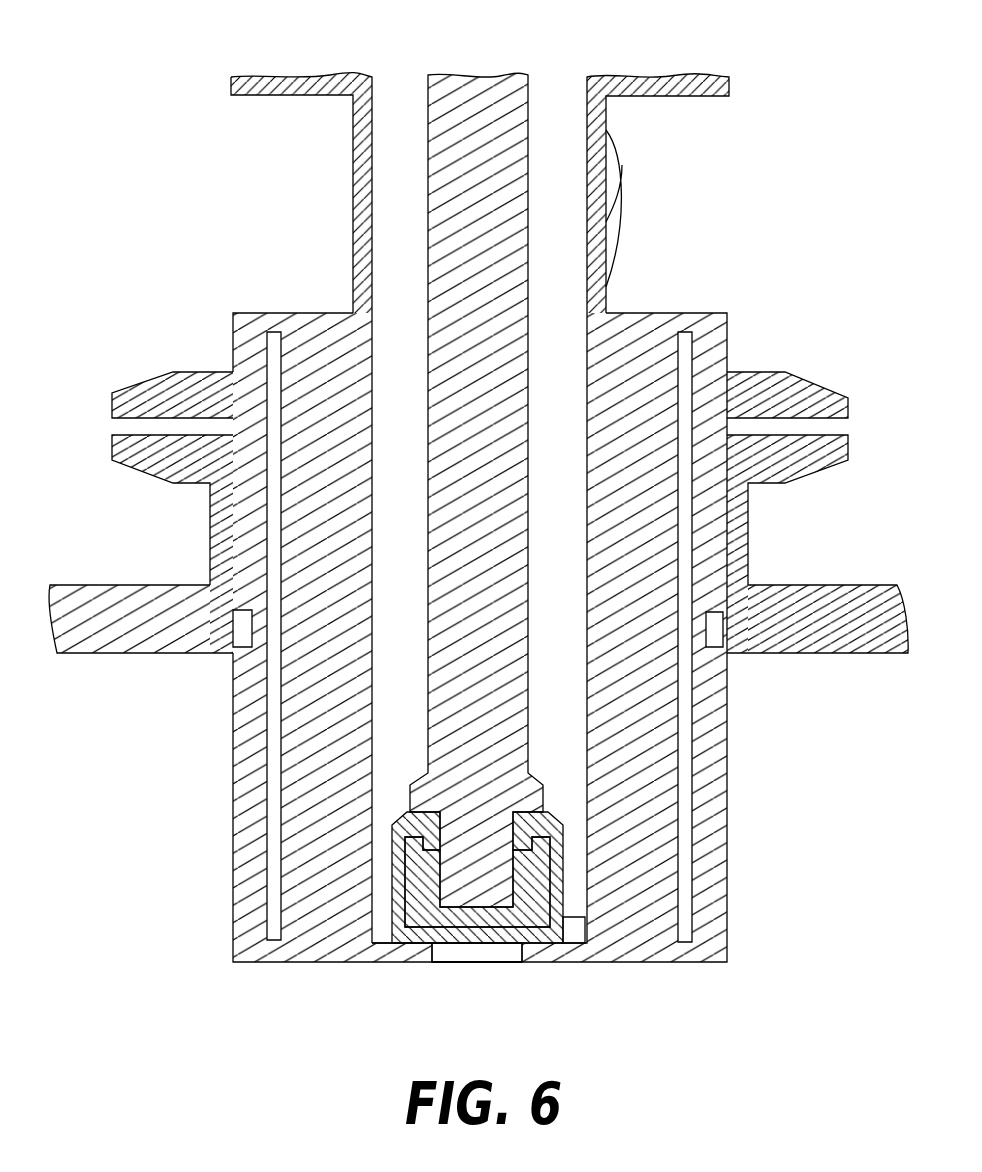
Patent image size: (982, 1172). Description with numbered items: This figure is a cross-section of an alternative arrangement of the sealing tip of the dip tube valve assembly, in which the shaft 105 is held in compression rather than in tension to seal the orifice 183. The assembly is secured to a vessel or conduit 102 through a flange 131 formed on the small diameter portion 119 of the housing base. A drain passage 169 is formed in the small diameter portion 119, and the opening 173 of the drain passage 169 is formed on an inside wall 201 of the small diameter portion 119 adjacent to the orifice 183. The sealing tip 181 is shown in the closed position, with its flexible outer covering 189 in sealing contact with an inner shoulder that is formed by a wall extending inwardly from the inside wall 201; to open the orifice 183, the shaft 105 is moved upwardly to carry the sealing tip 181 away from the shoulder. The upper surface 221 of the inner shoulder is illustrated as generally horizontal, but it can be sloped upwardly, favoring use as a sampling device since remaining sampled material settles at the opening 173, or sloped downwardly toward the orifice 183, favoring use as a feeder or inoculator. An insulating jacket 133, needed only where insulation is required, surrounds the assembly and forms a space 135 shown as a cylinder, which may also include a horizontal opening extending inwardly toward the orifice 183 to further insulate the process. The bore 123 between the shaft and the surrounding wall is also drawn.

The vessel or conduit 102 is at (820, 585).
The shaft 105 is at (530, 313).
The small diameter portion 119 is at (353, 215).
The bore 123 is at (555, 155).
The flange 131 is at (740, 372).
The insulating jacket 133 is at (727, 793).
The space 135 is at (685, 868).
The drain passage 169 is at (617, 223).
The opening 173 is at (580, 928).
The sealing tip 181 is at (565, 892).
The orifice 183 is at (458, 950).
The flexible outer covering 189 is at (497, 944).
The inside wall 201 is at (371, 660).
The upper surface 221 is at (385, 943).